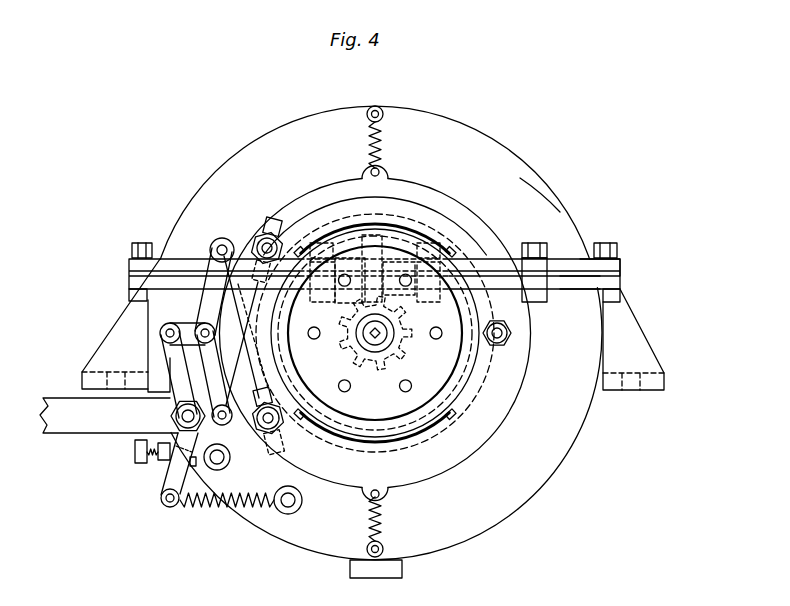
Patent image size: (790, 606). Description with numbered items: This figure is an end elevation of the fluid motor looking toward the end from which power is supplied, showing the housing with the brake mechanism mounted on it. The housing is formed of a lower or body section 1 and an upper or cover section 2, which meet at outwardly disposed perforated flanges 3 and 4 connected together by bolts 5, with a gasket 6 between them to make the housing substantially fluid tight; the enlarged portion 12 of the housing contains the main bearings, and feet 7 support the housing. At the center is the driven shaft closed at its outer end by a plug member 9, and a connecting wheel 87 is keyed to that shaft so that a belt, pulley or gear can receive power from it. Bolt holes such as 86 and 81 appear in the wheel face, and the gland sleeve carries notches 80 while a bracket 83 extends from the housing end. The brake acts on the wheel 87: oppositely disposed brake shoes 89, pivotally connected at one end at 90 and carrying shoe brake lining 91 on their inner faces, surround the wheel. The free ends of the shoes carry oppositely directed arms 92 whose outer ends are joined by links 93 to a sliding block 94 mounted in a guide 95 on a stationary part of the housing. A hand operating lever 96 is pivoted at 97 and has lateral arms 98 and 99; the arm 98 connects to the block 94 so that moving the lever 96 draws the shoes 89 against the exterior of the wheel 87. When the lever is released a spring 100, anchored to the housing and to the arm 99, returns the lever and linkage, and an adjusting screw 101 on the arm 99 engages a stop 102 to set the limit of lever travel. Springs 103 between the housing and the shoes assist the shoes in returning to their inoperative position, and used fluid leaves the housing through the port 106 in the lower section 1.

The lower or body section 1 is at (588, 421).
The upper or cover section 2 is at (553, 198).
The perforated flange 3 is at (613, 282).
The perforated flange 4 is at (620, 263).
The bolts 5 is at (592, 247).
The gasket 6 is at (570, 277).
The supporting foot 7 is at (88, 380).
The plug member 9 is at (368, 340).
The enlarged portion of the housing 12 is at (262, 133).
The notches 80 is at (376, 372).
The inner cross piece 81 is at (408, 290).
The bracket 83 is at (358, 224).
The bolt hole 86 is at (340, 298).
The connecting wheel 87 is at (379, 348).
The brake shoes 89 is at (412, 190).
The pivotal connection 90 is at (516, 341).
The shoe brake lining 91 is at (417, 228).
The oppositely directed arms 92 is at (246, 254).
The links 93 is at (208, 311).
The sliding block 94 is at (168, 323).
The guide 95 is at (175, 346).
The hand operating lever 96 is at (65, 418).
The pivot 97 is at (180, 416).
The lateral arm 98 is at (173, 367).
The lateral arm 99 is at (167, 482).
The spring 100 is at (208, 507).
The adjusting screw 101 is at (135, 457).
The stop 102 is at (222, 460).
The springs 103 is at (381, 150).
The port 106 is at (402, 573).